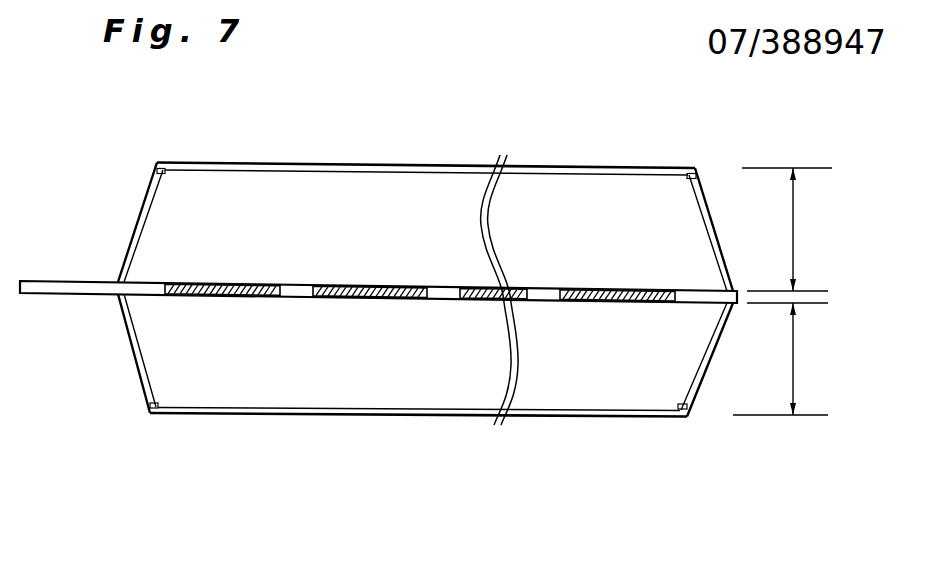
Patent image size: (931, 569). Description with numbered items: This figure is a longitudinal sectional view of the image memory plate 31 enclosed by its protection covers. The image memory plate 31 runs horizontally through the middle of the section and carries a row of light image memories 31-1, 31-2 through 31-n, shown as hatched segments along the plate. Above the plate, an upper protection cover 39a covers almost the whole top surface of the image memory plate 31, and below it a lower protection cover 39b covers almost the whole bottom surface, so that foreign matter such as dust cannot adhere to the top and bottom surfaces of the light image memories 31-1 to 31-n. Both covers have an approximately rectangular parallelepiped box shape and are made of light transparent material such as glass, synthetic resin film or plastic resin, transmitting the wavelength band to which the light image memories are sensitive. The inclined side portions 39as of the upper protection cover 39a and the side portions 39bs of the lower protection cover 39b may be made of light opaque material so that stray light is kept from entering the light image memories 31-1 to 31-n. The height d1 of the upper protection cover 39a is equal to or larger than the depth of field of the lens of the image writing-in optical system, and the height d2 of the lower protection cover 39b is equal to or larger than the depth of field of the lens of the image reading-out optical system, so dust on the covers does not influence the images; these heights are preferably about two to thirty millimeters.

The upper protection cover 39a is at (602, 163).
The lower protection cover 39b is at (536, 422).
The side portion of the upper protection cover 39as is at (138, 220).
The side portion of the lower protection cover 39bs is at (135, 357).
The image memory plate 31 is at (740, 295).
The light image memory 31-1 is at (223, 296).
The light image memory 31-2 is at (373, 298).
The light image memory 31-n is at (635, 303).
The height of the upper protection cover d1 is at (790, 229).
The height of the lower protection cover d2 is at (784, 359).